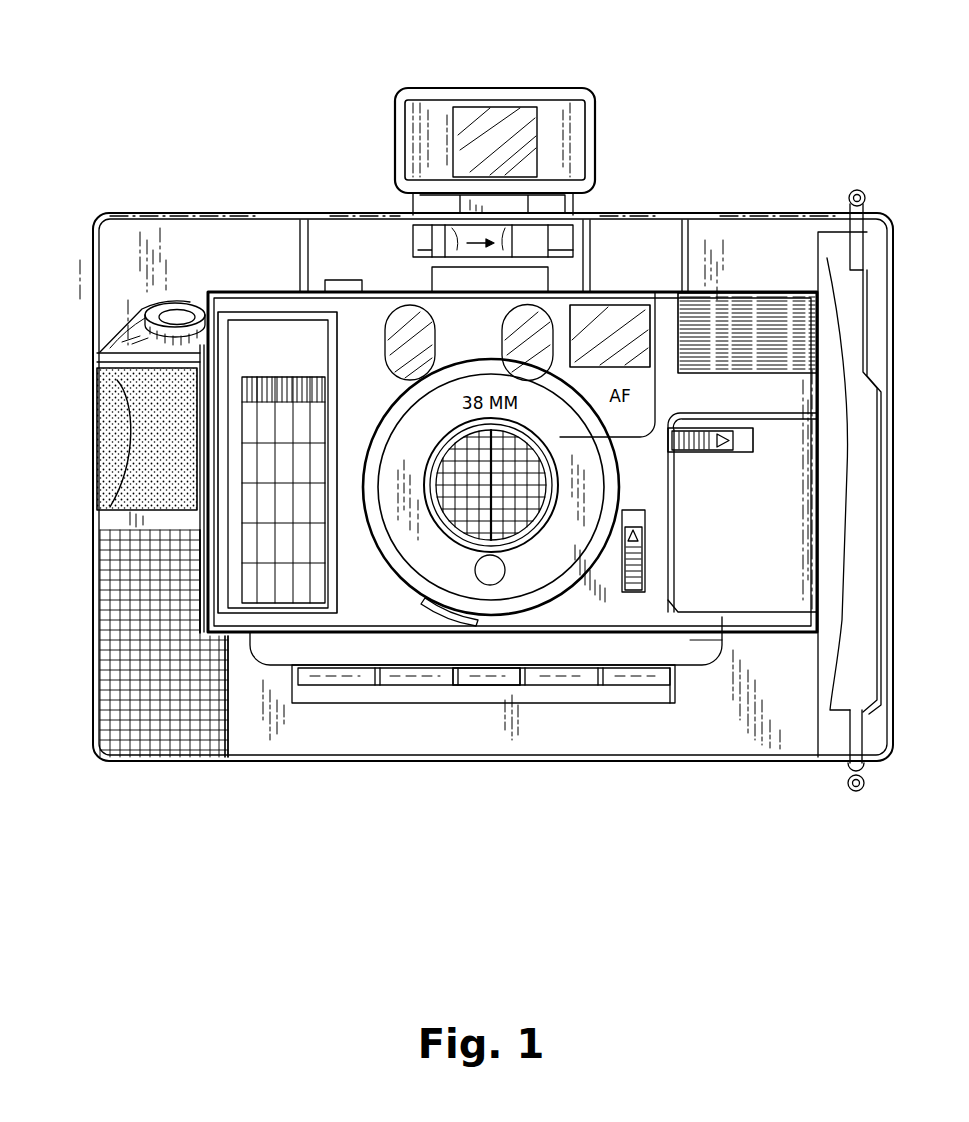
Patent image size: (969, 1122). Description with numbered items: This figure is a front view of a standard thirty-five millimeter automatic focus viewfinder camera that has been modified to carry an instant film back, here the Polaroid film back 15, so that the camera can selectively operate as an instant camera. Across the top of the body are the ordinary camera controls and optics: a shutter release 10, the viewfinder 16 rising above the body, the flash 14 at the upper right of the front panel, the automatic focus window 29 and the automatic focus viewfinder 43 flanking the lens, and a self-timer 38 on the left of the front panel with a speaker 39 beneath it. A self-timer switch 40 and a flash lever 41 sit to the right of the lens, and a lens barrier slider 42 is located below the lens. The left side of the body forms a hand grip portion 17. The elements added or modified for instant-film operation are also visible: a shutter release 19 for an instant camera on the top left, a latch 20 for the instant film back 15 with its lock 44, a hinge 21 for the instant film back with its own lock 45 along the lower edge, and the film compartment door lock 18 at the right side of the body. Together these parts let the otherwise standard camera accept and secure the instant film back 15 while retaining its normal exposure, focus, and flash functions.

The shutter release 10 is at (343, 280).
The flash 14 is at (745, 292).
The Polaroid film back 15 is at (656, 232).
The viewfinder 16 is at (534, 90).
The hand grip portion 17 is at (97, 410).
The film compartment door lock 18 is at (846, 772).
The shutter release for an instant camera 19 is at (180, 312).
The latch 20 is at (512, 244).
The hinge 21 is at (575, 688).
The automatic focus window 29 is at (388, 312).
The self-timer 38 is at (278, 378).
The speaker 39 is at (328, 580).
The self-timer switch 40 is at (646, 552).
The flash lever 41 is at (715, 427).
The lens barrier slider 42 is at (452, 622).
The automatic focus viewfinder 43 is at (618, 310).
The lock for the latch 44 is at (477, 284).
The lock for the hinge 45 is at (478, 688).